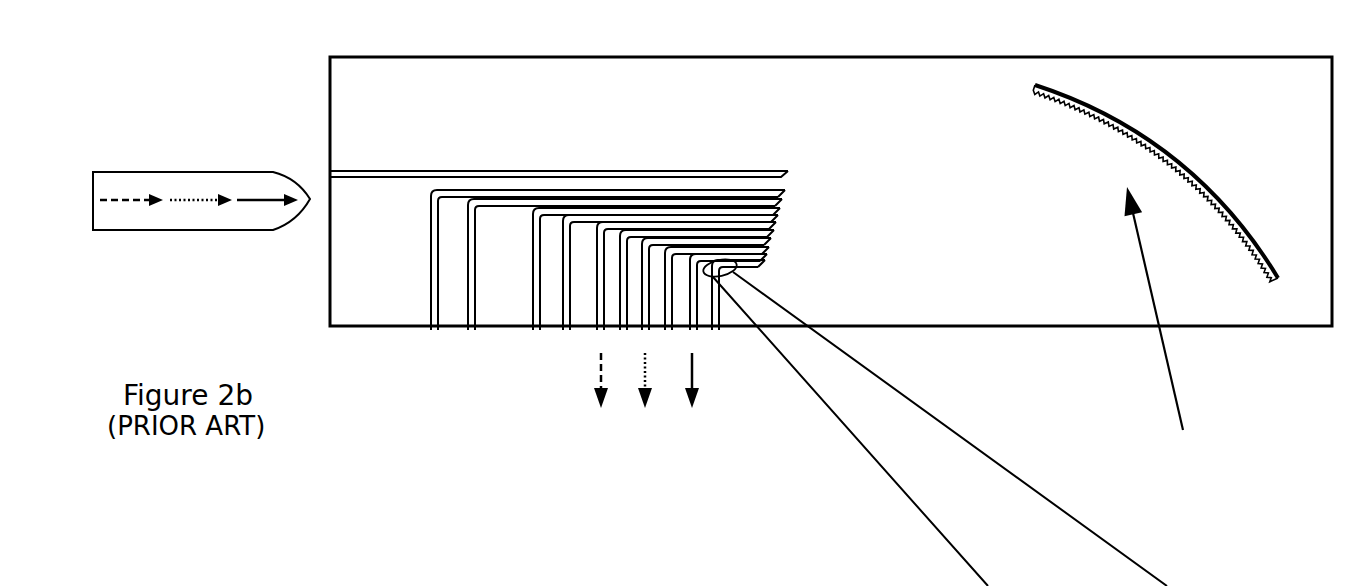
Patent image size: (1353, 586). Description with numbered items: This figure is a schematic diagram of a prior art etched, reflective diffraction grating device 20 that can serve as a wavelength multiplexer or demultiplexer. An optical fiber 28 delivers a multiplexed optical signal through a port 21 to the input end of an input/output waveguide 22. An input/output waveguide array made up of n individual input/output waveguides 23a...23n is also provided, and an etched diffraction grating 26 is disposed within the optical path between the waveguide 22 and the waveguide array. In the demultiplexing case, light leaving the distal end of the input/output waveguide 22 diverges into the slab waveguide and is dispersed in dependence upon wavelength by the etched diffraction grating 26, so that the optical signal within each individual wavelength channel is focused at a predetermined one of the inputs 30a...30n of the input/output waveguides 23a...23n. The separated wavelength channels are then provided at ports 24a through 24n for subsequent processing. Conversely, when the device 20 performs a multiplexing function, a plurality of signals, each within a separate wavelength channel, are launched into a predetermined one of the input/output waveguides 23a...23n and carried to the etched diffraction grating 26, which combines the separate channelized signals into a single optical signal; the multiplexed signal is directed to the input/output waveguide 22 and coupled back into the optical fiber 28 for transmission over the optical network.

The etched, reflective diffraction grating device 20 is at (934, 421).
The port 21 is at (329, 172).
The input/output waveguide 22 is at (374, 170).
The input/output waveguides 23a...23n is at (720, 210).
The port 24a is at (434, 328).
The port 24n is at (720, 327).
The etched diffraction grating 26 is at (1153, 148).
The optical fiber 28 is at (200, 172).
The inputs 30a...30n is at (790, 212).